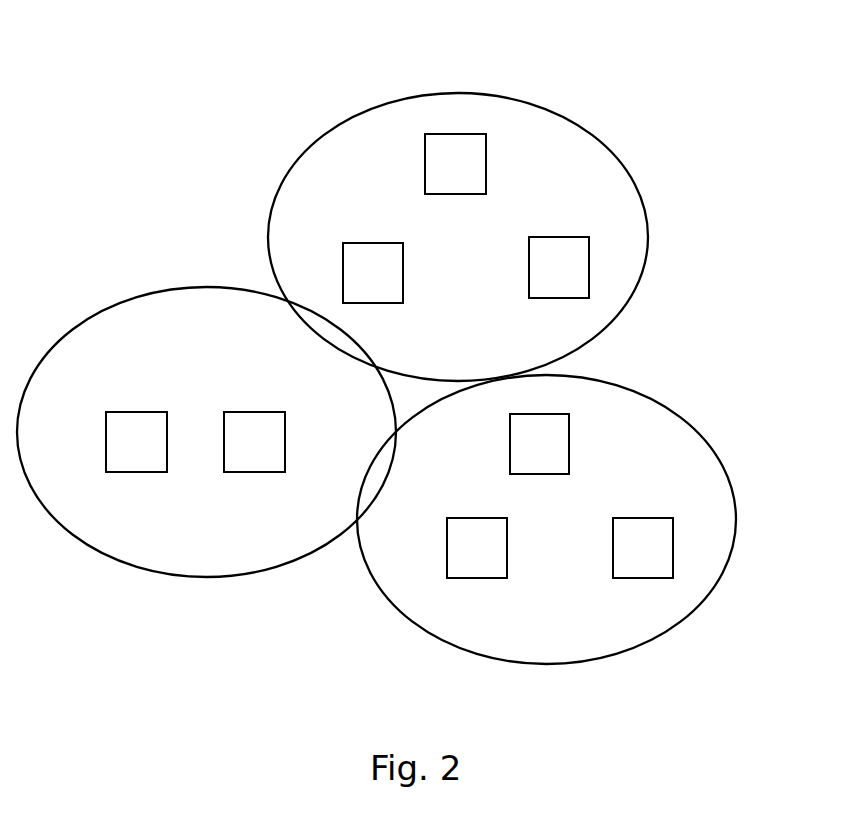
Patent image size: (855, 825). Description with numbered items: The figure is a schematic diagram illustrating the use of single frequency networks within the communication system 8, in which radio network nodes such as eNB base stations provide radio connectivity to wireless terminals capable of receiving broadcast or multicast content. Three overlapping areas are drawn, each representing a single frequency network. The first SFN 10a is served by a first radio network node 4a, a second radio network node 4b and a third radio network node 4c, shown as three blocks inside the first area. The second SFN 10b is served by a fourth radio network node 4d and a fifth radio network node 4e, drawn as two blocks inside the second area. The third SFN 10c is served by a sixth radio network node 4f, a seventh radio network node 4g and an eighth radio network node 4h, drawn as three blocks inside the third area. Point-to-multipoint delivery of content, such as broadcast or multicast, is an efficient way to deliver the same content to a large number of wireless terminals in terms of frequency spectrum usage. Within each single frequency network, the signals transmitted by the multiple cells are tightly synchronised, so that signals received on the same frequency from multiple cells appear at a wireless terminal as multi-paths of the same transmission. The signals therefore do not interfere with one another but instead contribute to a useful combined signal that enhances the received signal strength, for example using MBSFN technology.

The communication system 8 is at (733, 116).
The first SFN 10a is at (313, 140).
The second SFN 10b is at (102, 310).
The third SFN 10c is at (672, 408).
The first radio network node 4a is at (486, 163).
The second radio network node 4b is at (403, 268).
The third radio network node 4c is at (529, 297).
The fourth radio network node 4d is at (136, 412).
The fifth radio network node 4e is at (254, 412).
The sixth radio network node 4f is at (478, 578).
The seventh radio network node 4g is at (544, 474).
The eighth radio network node 4h is at (641, 518).